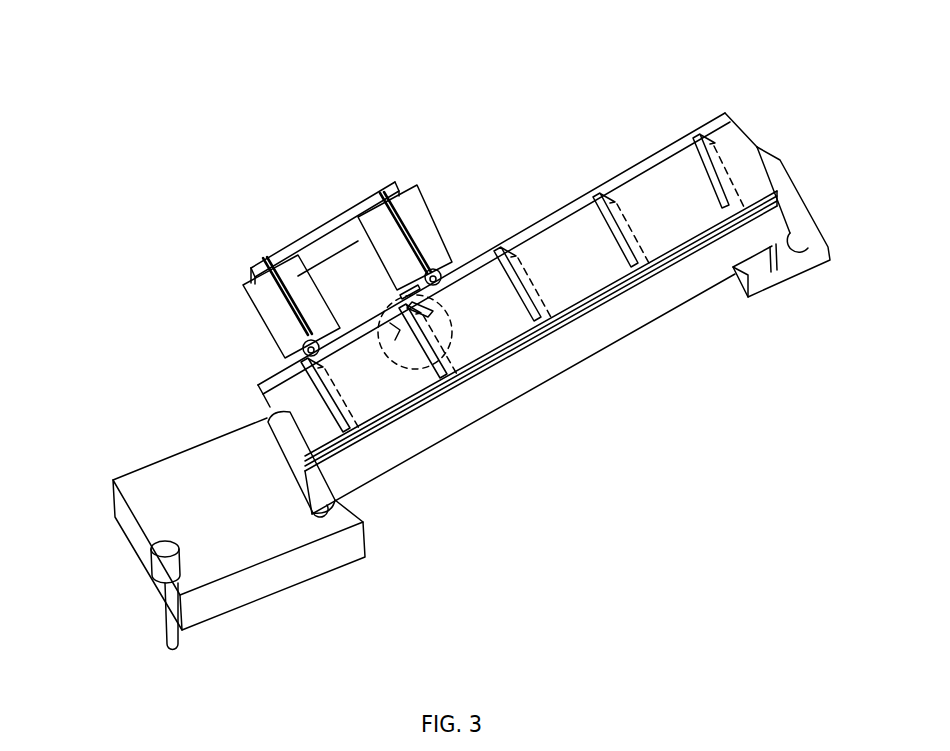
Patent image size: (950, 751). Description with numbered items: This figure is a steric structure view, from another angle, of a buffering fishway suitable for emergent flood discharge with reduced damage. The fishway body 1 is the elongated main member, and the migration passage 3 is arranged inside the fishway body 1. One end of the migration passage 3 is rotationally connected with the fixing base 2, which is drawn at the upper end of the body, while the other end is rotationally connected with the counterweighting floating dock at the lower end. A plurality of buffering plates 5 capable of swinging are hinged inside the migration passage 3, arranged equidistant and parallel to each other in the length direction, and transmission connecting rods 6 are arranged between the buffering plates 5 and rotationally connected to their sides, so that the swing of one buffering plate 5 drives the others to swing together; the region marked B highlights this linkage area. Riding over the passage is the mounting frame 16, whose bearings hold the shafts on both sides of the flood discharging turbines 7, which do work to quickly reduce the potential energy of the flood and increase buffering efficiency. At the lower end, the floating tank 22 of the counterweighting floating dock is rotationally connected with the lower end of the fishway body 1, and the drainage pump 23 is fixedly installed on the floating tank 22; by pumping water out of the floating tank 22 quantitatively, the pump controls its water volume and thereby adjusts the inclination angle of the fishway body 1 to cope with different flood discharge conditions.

The fishway body 1 is at (567, 353).
The fixing base 2 is at (790, 282).
The migration passage 3 is at (587, 275).
The buffering plate 5 is at (608, 188).
The transmission connecting rod 6 is at (690, 230).
The flood discharging turbine 7 is at (437, 222).
The mounting frame 16 is at (325, 227).
The floating tank 22 is at (290, 587).
The drainage pump 23 is at (158, 567).
The detail region B is at (452, 357).